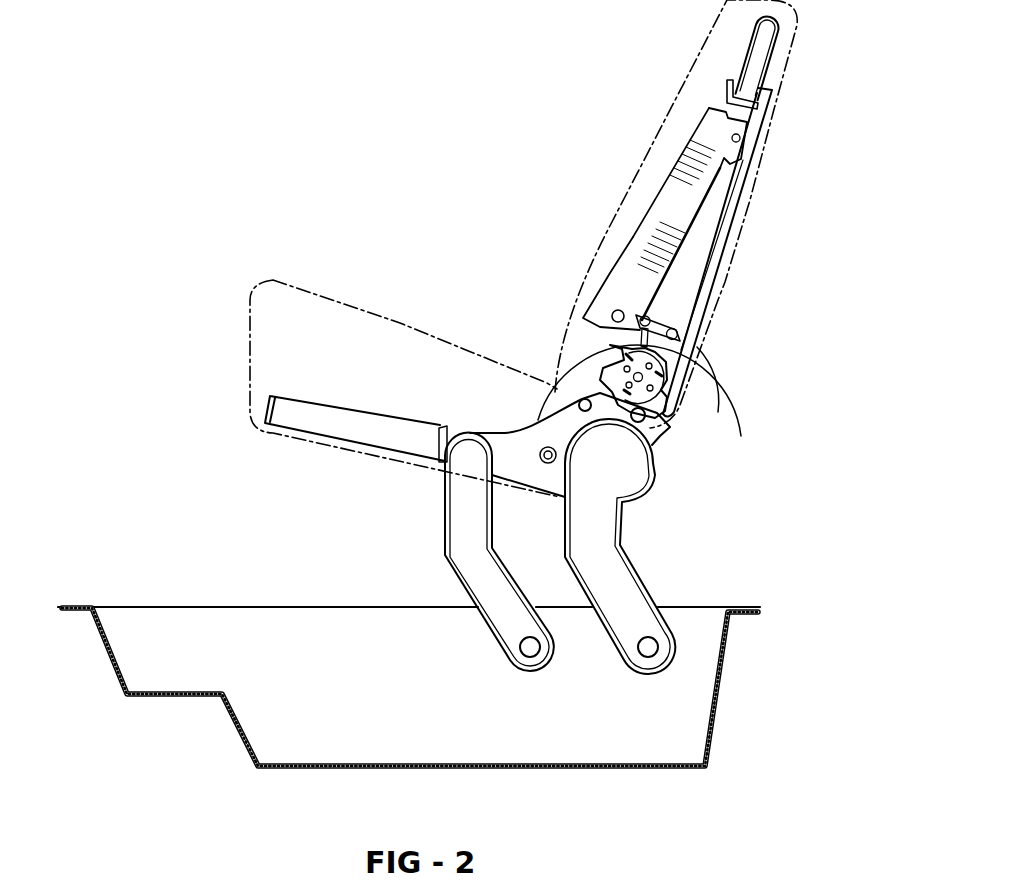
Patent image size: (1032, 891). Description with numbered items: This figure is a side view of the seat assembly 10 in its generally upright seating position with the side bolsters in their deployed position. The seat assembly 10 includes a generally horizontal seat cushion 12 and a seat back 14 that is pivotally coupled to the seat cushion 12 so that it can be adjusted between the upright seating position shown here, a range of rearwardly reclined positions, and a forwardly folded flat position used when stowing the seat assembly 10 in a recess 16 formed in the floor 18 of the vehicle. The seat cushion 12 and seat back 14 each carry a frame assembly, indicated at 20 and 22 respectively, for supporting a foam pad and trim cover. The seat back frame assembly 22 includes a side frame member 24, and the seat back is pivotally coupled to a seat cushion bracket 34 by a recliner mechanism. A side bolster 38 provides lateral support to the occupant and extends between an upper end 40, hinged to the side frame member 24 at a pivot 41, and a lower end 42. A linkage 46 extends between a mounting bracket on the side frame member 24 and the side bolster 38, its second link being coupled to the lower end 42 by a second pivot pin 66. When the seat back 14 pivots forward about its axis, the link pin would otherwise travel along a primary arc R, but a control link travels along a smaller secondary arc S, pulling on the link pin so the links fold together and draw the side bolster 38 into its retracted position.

The seat assembly 10 is at (416, 78).
The seat cushion 12 is at (340, 297).
The seat back 14 is at (693, 80).
The recess 16 is at (716, 636).
The floor 18 is at (78, 605).
The seat cushion frame assembly 20 is at (378, 445).
The seat back frame assembly 22 is at (775, 51).
The side frame member 24 is at (718, 247).
The seat cushion bracket 34 is at (613, 370).
The side bolster 38 is at (633, 237).
The upper end 40 is at (715, 135).
The pivot 41 is at (741, 140).
The lower end 42 is at (600, 312).
The linkage 46 is at (660, 318).
The second pivot pin 66 is at (622, 312).
The primary arc R is at (535, 407).
The secondary arc S is at (720, 392).